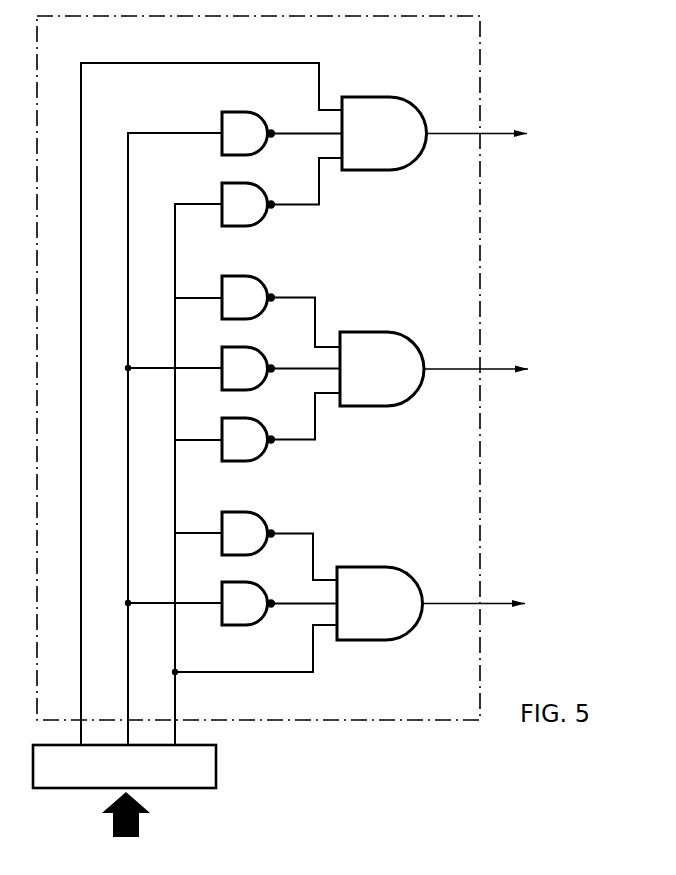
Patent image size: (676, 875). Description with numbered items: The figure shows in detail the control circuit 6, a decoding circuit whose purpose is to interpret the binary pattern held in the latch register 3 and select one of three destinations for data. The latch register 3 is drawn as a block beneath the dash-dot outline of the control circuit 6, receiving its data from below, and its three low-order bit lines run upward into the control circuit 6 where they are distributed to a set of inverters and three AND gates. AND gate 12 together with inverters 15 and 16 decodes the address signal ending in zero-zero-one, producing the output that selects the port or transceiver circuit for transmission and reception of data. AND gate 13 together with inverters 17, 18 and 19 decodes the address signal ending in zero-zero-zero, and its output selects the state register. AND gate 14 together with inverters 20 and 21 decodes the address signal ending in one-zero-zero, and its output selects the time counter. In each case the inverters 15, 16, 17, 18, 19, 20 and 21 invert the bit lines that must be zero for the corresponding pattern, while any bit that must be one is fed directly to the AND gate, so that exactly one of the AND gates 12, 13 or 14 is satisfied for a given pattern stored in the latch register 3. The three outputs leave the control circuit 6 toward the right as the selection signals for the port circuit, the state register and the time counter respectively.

The control circuit 6 is at (481, 27).
The latch register 3 is at (217, 752).
The AND gate 12 is at (424, 105).
The AND gate 13 is at (415, 338).
The AND gate 14 is at (413, 575).
The inverter 15 is at (262, 115).
The inverter 16 is at (262, 186).
The inverter 17 is at (262, 279).
The inverter 18 is at (262, 350).
The inverter 19 is at (262, 421).
The inverter 20 is at (262, 515).
The inverter 21 is at (262, 585).